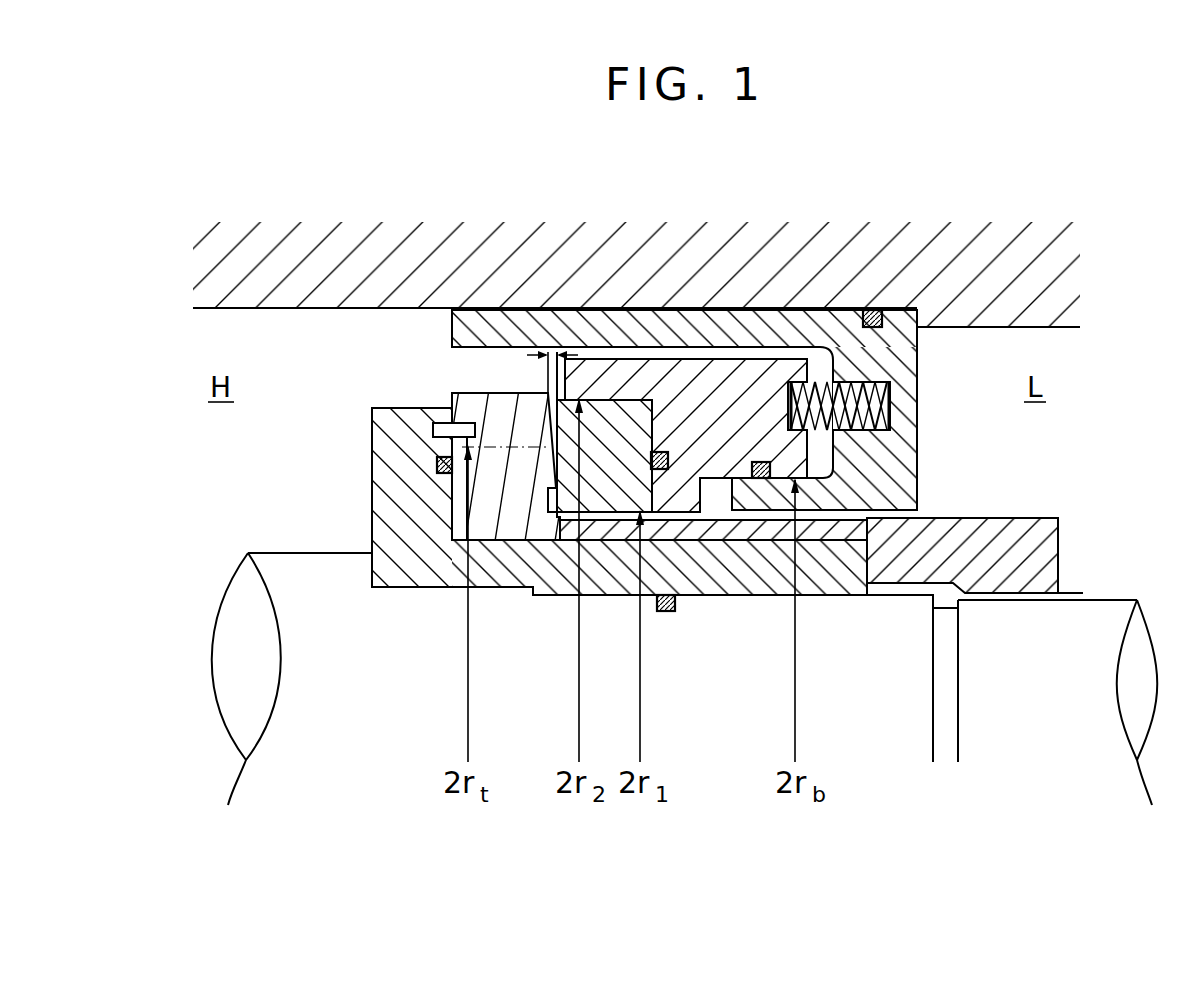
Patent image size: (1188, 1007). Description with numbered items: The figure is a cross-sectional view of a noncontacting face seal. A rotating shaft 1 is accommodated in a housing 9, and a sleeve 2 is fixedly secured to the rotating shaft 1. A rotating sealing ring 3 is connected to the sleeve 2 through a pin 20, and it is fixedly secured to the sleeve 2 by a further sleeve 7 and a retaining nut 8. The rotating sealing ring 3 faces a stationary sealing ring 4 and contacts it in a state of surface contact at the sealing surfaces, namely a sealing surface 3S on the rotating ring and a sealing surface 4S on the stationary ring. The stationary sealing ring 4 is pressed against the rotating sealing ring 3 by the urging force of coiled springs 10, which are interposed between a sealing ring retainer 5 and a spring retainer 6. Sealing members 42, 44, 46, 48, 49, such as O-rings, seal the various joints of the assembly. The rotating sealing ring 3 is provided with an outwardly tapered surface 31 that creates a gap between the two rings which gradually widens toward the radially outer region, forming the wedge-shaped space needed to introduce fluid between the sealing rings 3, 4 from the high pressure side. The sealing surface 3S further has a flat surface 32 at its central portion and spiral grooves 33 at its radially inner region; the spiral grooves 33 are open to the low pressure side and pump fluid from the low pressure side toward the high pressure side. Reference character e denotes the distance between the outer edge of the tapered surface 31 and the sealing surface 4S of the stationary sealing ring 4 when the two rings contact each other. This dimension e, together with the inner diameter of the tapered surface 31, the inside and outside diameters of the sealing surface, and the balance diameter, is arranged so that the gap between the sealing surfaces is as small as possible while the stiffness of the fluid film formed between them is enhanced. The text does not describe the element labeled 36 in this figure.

The rotating shaft 1 is at (384, 705).
The sleeve 2 is at (372, 505).
The rotating sealing ring 3 is at (605, 480).
The sealing surface 3S is at (562, 480).
The stationary sealing ring 4 is at (472, 402).
The sealing surface 4S is at (540, 417).
The sealing ring retainer 5 is at (737, 462).
The spring retainer 6 is at (905, 432).
The sleeve 7 is at (848, 530).
The retaining nut 8 is at (1048, 552).
The housing 9 is at (614, 143).
The coiled springs 10 is at (890, 392).
The pin 20 is at (433, 426).
The tapered surface 31 is at (566, 400).
The flat surface 32 is at (548, 488).
The spiral grooves 33 is at (548, 512).
The outer peripheral edge of seal ring 36 is at (602, 400).
The sealing member 42 is at (435, 463).
The sealing member 44 is at (666, 452).
The sealing member 46 is at (765, 462).
The sealing member 48 is at (872, 310).
The sealing member 49 is at (670, 612).
The distance e is at (547, 368).